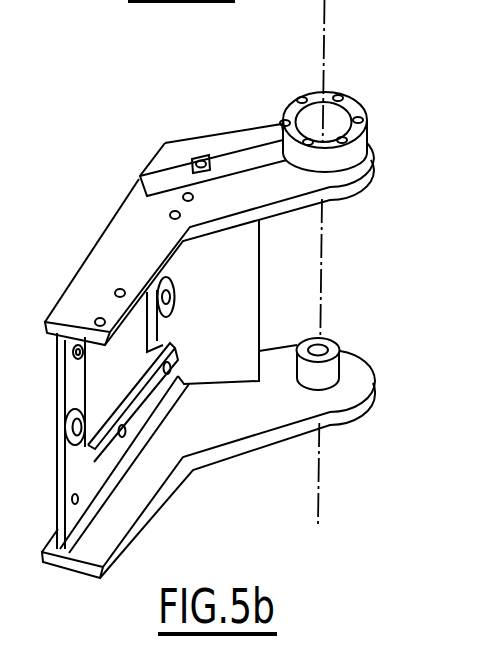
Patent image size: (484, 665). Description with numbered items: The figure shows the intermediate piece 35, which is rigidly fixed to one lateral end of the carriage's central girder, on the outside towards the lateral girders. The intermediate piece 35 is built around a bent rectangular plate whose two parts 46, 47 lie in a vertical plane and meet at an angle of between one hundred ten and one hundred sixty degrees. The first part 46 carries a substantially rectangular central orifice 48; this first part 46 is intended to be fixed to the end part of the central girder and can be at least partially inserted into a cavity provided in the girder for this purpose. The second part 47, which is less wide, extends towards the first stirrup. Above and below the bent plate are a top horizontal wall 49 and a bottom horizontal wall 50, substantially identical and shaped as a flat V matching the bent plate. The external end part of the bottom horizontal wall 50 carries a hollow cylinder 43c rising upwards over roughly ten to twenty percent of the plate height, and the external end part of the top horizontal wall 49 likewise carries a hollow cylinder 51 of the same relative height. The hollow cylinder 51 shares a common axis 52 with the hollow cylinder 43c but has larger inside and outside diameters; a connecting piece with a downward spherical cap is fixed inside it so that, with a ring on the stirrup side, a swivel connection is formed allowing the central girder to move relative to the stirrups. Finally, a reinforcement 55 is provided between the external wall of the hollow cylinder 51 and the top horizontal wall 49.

The intermediate piece 35 is at (204, 113).
The hollow cylinder 43c is at (323, 374).
The first part 46 is at (76, 460).
The second part 47 is at (231, 283).
The central orifice 48 is at (173, 387).
The top horizontal wall 49 is at (129, 249).
The bottom horizontal wall 50 is at (134, 488).
The hollow cylinder 51 is at (352, 152).
The axis 52 is at (327, 28).
The reinforcement 55 is at (173, 172).